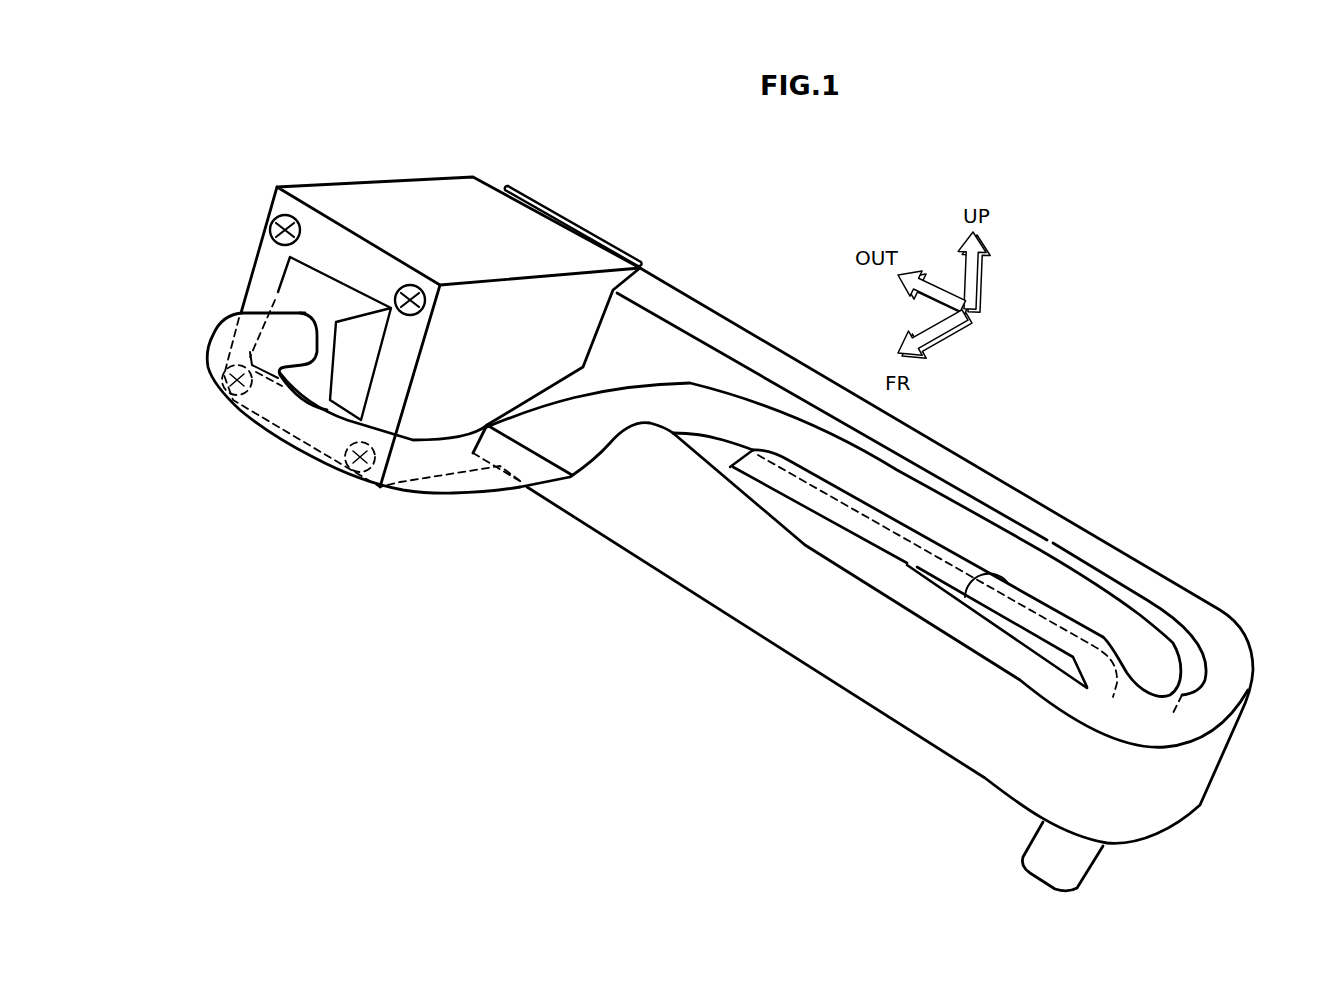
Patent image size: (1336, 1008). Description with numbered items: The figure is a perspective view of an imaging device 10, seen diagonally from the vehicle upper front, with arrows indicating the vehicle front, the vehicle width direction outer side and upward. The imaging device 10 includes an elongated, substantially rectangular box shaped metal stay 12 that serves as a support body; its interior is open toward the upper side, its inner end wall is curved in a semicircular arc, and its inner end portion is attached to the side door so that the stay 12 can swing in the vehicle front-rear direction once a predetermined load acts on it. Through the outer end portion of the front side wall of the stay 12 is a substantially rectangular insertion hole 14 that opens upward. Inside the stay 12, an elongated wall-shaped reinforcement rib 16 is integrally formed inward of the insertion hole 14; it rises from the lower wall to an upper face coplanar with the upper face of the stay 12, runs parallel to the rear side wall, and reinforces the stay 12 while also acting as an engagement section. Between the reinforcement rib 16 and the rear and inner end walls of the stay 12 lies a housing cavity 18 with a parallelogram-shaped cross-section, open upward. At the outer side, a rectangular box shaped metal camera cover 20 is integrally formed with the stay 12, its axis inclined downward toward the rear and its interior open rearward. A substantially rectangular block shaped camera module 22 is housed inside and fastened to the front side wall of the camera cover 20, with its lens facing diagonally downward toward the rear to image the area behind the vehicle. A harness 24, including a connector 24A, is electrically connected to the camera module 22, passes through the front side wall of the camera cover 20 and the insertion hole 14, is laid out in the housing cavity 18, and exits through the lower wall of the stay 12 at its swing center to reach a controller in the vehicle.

The imaging device 10 is at (717, 230).
The stay 12 is at (750, 332).
The insertion hole 14 is at (583, 455).
The reinforcement rib 16 is at (913, 527).
The housing cavity 18 is at (965, 600).
The camera cover 20 is at (385, 178).
The camera module 22 is at (560, 213).
The harness 24 is at (447, 493).
The connector 24A is at (285, 300).